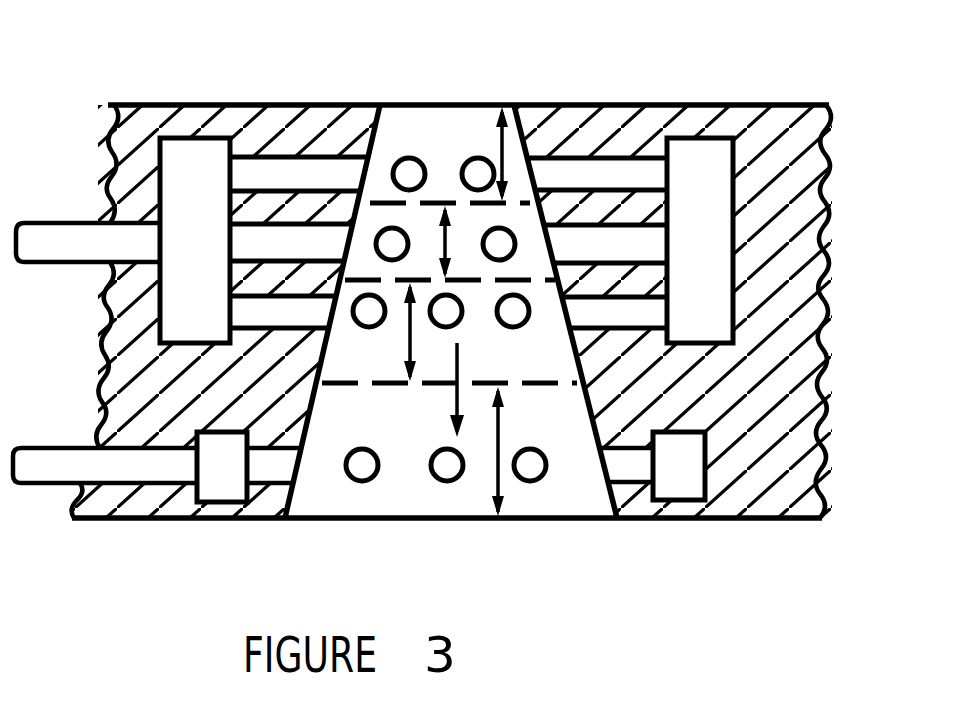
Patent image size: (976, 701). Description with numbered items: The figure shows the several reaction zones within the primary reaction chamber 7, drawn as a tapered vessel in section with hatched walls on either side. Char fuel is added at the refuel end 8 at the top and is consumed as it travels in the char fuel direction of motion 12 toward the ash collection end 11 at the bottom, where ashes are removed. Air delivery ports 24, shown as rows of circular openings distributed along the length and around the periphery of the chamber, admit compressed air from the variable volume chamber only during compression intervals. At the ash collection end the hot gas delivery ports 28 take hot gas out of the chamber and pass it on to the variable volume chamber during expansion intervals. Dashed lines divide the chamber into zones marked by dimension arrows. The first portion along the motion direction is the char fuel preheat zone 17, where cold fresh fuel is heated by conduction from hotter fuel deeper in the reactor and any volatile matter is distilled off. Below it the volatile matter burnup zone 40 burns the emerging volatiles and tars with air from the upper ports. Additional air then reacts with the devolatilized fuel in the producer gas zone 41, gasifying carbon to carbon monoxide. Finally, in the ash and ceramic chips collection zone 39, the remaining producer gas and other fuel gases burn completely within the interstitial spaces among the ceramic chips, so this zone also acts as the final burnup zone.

The primary reaction chamber 7 is at (498, 357).
The refuel end 8 is at (410, 118).
The ash collection end 11 is at (308, 500).
The char fuel direction of motion 12 is at (453, 397).
The char fuel preheat zone 17 is at (497, 152).
The air delivery ports 24 is at (368, 311).
The hot gas delivery ports 28 is at (361, 467).
The ash and ceramic chips collection zone 39 is at (500, 428).
The volatile matter burnup zone 40 is at (450, 243).
The producer gas zone 41 is at (410, 343).